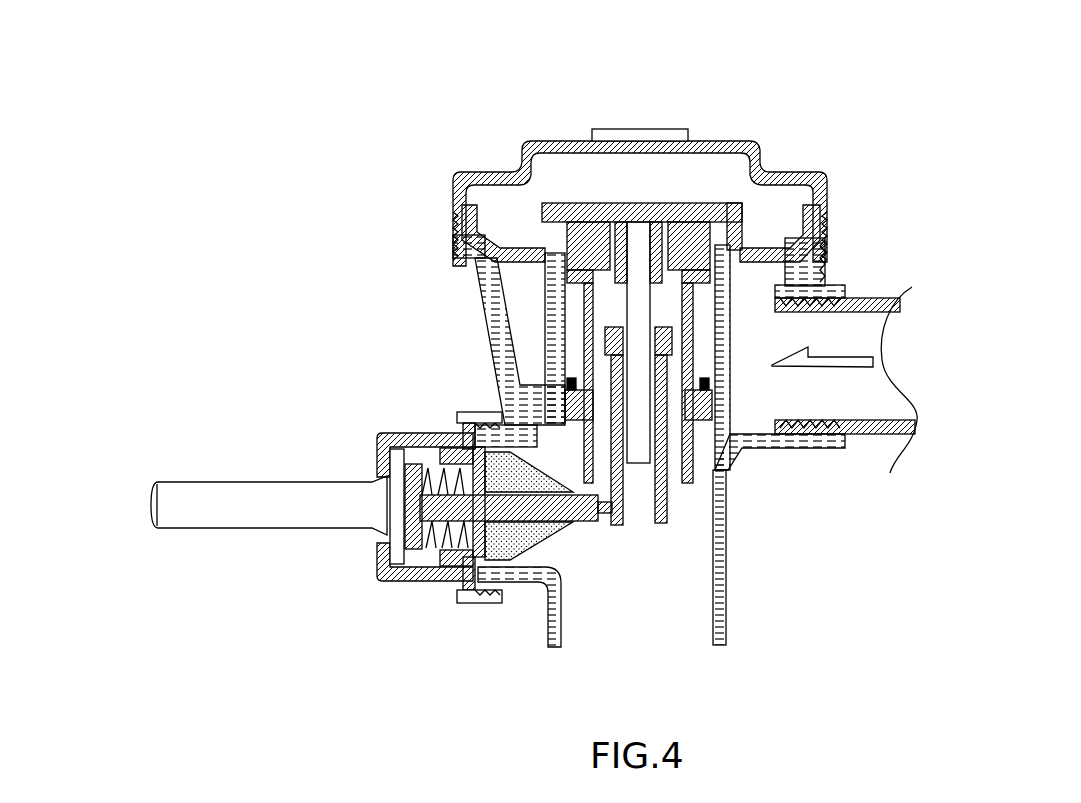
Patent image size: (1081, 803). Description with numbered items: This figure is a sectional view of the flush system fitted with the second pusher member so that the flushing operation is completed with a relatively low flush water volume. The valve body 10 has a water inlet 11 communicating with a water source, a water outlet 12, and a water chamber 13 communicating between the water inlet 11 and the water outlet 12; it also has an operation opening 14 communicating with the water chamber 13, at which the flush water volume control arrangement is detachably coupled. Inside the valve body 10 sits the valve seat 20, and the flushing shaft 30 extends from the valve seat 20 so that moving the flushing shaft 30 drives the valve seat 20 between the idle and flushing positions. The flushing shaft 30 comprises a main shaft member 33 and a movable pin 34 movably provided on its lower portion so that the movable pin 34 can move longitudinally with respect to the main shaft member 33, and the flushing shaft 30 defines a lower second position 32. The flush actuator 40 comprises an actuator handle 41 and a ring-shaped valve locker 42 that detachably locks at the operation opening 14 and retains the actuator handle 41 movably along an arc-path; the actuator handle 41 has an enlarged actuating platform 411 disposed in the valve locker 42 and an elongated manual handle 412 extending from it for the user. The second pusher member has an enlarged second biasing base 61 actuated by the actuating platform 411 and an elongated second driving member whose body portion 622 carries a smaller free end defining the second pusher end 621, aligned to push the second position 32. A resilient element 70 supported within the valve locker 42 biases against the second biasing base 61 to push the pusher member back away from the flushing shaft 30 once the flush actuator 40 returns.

The valve body 10 is at (420, 152).
The water inlet 11 is at (860, 332).
The water outlet 12 is at (690, 590).
The water chamber 13 is at (728, 176).
The operation opening 14 is at (552, 553).
The valve seat 20 is at (583, 210).
The flushing shaft 30 is at (852, 605).
The second position 32 is at (660, 500).
The main shaft member 33 is at (632, 240).
The movable pin 34 is at (660, 472).
The flush actuator 40 is at (118, 255).
The actuator handle 41 is at (140, 390).
The actuating platform 411 is at (397, 505).
The manual handle 412 is at (252, 507).
The valve locker 42 is at (500, 597).
The second biasing base 61 is at (412, 507).
The second pusher end 621 is at (629, 504).
The body portion 622 is at (502, 430).
The resilient element 70 is at (440, 545).